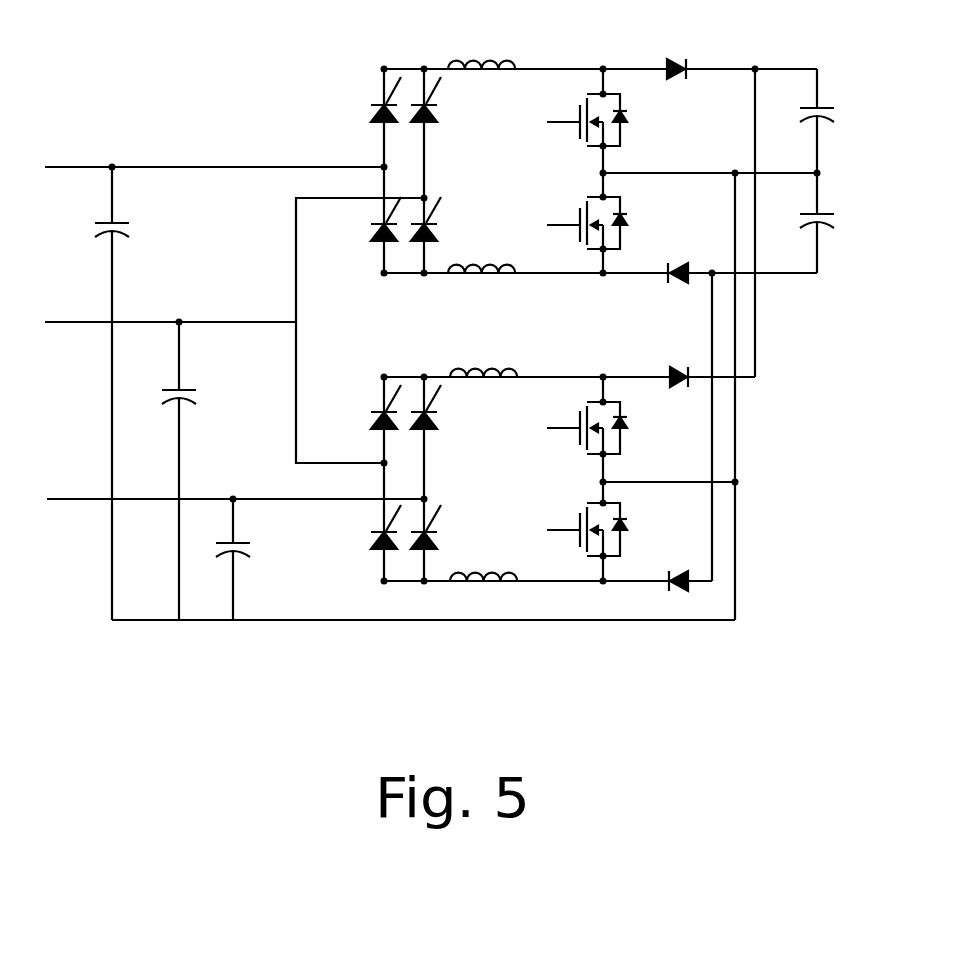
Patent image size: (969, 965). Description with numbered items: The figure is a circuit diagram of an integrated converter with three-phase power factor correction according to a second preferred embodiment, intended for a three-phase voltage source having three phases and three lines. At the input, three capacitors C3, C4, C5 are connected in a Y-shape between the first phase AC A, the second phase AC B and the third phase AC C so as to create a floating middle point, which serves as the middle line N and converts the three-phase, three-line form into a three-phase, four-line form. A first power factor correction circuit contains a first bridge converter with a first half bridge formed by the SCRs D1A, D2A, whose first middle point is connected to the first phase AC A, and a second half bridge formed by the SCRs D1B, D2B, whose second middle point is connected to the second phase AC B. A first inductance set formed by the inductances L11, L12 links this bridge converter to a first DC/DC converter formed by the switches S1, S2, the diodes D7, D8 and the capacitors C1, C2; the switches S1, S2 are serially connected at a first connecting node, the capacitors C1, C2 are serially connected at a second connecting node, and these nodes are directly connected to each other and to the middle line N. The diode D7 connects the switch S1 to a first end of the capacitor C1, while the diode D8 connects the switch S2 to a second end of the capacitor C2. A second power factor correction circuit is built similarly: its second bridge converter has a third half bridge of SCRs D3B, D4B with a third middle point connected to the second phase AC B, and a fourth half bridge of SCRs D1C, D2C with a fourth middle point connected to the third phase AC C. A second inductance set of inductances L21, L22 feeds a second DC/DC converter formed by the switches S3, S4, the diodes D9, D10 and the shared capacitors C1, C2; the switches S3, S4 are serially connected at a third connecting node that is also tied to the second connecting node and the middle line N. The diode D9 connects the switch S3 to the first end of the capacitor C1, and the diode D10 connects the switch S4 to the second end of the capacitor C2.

The first phase AC A is at (78, 149).
The second phase AC B is at (78, 300).
The third phase AC C is at (79, 478).
The middle line N is at (128, 629).
The capacitor C1 is at (842, 112).
The capacitor C2 is at (842, 223).
The capacitor C3 is at (134, 393).
The capacitor C4 is at (201, 471).
The capacitor C5 is at (256, 559).
The inductance L11 is at (481, 51).
The inductance L12 is at (481, 287).
The inductance L21 is at (483, 360).
The inductance L22 is at (483, 593).
The SCR D1A is at (359, 108).
The SCR D1B is at (450, 108).
The SCR D2A is at (359, 225).
The SCR D2B is at (450, 225).
The SCR D3B is at (359, 411).
The SCR D1C is at (450, 419).
The SCR D4B is at (359, 529).
The SCR D2C is at (450, 527).
The diode D7 is at (658, 50).
The diode D8 is at (669, 252).
The diode D9 is at (664, 354).
The diode D10 is at (667, 561).
The switch S1 is at (578, 119).
The switch S2 is at (581, 222).
The switch S3 is at (583, 428).
The switch S4 is at (584, 529).